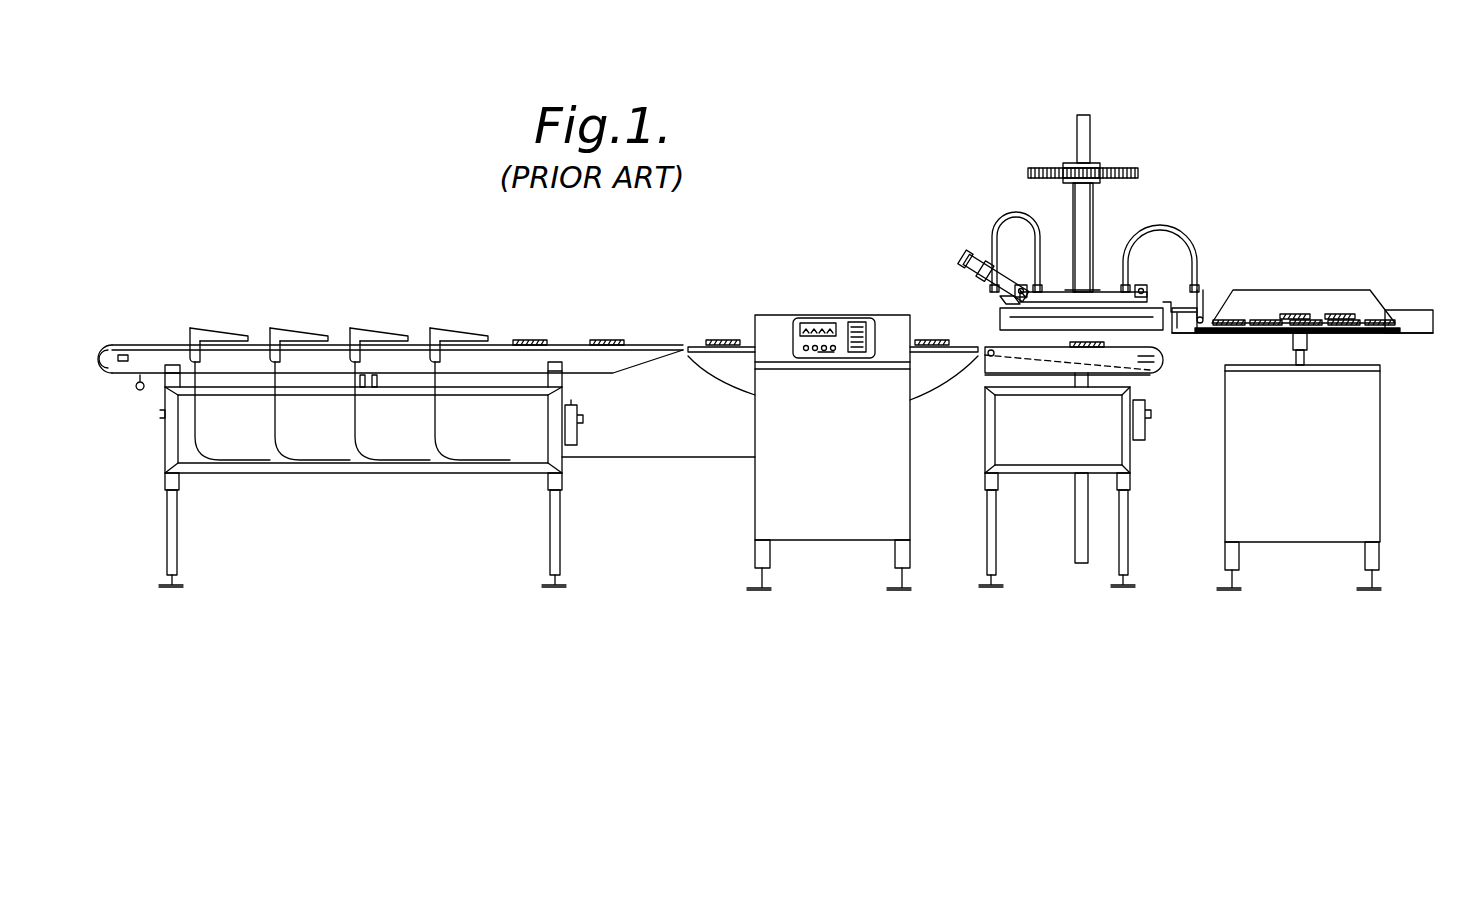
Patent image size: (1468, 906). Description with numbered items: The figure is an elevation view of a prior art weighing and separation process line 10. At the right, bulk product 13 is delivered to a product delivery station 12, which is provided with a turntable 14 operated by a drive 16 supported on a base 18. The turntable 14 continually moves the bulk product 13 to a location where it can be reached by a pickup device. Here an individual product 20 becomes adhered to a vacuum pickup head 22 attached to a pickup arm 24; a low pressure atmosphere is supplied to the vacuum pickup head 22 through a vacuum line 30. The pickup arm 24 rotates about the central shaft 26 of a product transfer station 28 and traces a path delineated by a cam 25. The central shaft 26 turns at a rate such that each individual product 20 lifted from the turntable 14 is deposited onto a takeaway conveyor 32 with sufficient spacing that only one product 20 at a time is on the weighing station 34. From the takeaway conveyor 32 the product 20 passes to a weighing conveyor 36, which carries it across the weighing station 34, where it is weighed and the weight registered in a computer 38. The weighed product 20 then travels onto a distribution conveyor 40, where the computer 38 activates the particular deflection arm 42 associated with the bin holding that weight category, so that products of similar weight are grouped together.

The weighing and separation process line 10 is at (770, 95).
The product delivery station 12 is at (1340, 272).
The bulk product 13 is at (1338, 316).
The turntable 14 is at (1420, 318).
The drive 16 is at (1308, 356).
The base 18 is at (1352, 456).
The individual product 20 is at (540, 330).
The vacuum pickup head 22 is at (968, 288).
The pickup arm 24 is at (990, 280).
The cam 25 is at (1148, 328).
The central shaft 26 is at (1085, 140).
The product transfer station 28 is at (1052, 150).
The vacuum line 30 is at (1015, 212).
The takeaway conveyor 32 is at (1148, 387).
The weighing station 34 is at (800, 306).
The weighing conveyor 36 is at (695, 345).
The computer 38 is at (785, 495).
The distribution conveyor 40 is at (177, 340).
The deflection arm 42 is at (245, 333).